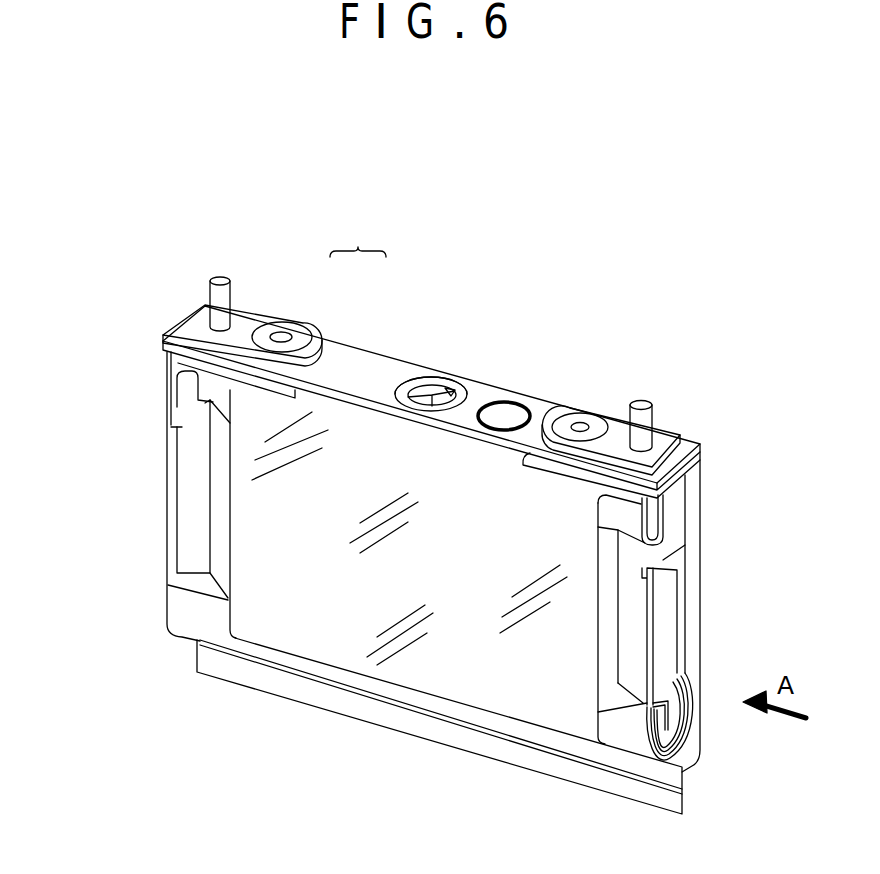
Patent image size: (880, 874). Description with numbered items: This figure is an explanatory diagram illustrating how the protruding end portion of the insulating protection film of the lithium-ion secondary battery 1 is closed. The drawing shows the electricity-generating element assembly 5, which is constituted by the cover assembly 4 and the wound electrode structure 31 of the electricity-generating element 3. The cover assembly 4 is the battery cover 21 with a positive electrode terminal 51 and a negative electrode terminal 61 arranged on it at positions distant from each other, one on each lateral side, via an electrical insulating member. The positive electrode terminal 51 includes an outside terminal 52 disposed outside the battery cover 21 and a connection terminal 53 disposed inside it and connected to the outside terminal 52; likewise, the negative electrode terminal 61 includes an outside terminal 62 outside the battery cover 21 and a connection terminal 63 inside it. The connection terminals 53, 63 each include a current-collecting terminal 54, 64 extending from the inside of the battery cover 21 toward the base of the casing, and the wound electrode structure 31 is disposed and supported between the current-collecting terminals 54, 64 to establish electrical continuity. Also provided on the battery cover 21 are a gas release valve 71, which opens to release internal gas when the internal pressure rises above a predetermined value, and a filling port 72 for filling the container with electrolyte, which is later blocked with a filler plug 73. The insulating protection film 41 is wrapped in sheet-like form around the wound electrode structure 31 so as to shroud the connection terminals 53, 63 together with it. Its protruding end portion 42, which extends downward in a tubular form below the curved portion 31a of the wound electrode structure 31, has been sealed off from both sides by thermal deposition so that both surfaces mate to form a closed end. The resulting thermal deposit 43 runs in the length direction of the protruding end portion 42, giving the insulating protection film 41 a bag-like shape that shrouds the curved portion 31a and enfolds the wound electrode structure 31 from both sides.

The lithium-ion secondary battery 1 is at (567, 284).
The electricity-generating element 3 is at (346, 440).
The cover assembly 4 is at (373, 340).
The electricity-generating element assembly 5 is at (358, 236).
The battery cover 21 is at (396, 372).
The wound electrode structure 31 is at (252, 523).
The curved portion 31a is at (673, 755).
The insulating protection film 41 is at (177, 631).
The protruding end portion 42 is at (477, 757).
The thermal deposit 43 is at (397, 722).
The positive electrode terminal 51 is at (197, 313).
The outside terminal 52 is at (257, 303).
The connection terminal 53 is at (157, 362).
The current-collecting terminal 54 is at (195, 471).
The negative electrode terminal 61 is at (678, 435).
The outside terminal 62 is at (617, 410).
The connection terminal 63 is at (680, 490).
The current-collecting terminal 64 is at (630, 605).
The gas release valve 71 is at (440, 373).
The filling port 72 is at (532, 408).
The filler plug 73 is at (498, 407).